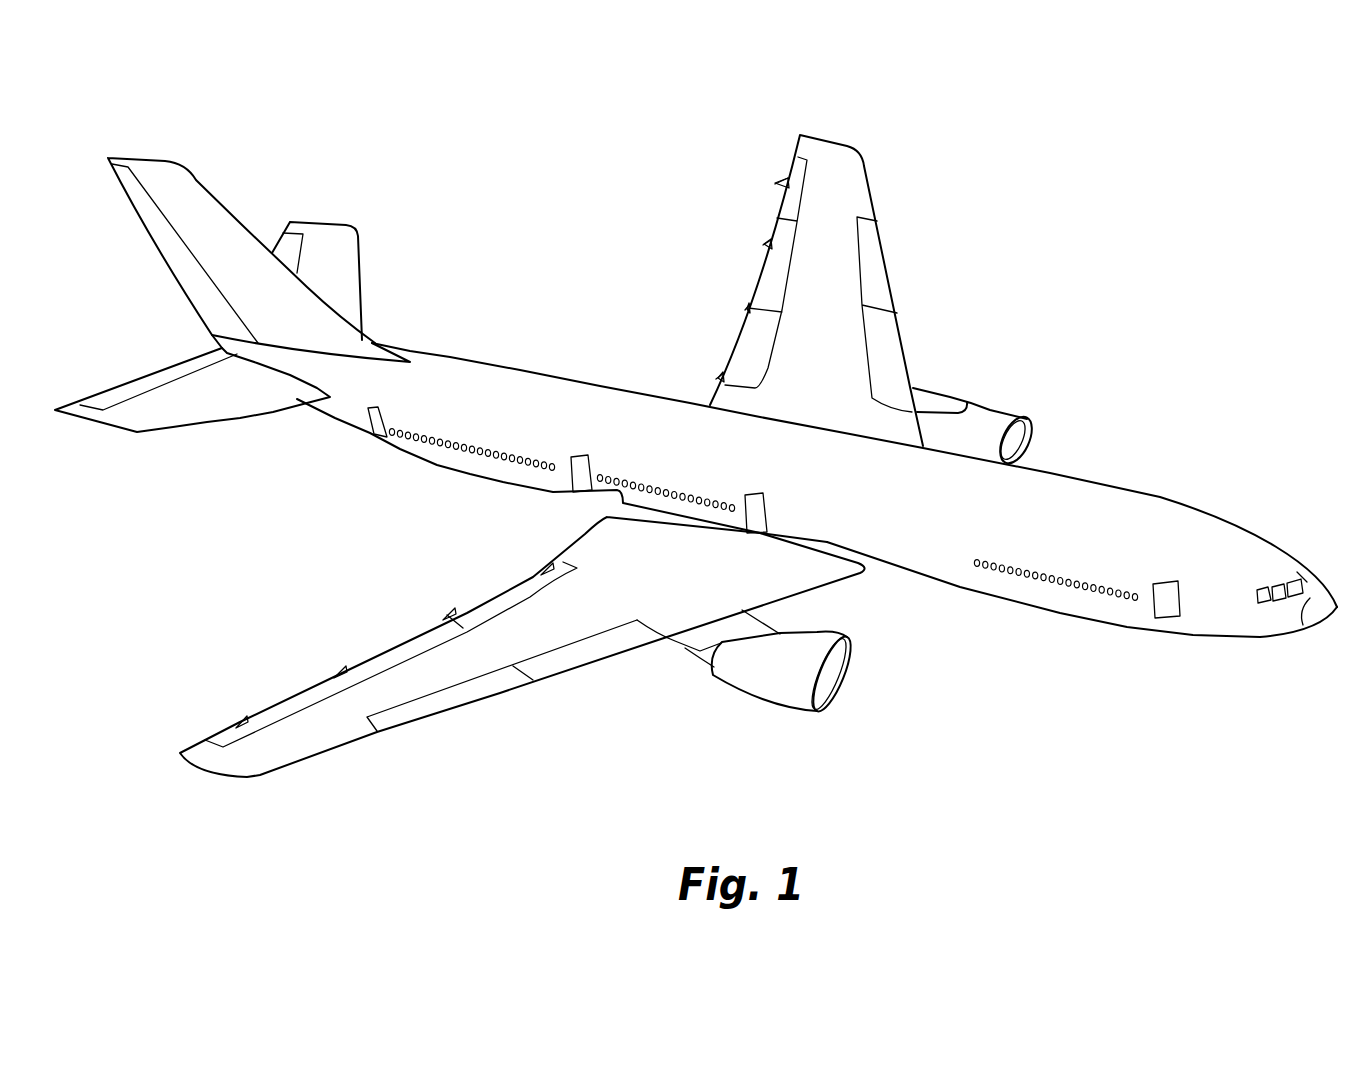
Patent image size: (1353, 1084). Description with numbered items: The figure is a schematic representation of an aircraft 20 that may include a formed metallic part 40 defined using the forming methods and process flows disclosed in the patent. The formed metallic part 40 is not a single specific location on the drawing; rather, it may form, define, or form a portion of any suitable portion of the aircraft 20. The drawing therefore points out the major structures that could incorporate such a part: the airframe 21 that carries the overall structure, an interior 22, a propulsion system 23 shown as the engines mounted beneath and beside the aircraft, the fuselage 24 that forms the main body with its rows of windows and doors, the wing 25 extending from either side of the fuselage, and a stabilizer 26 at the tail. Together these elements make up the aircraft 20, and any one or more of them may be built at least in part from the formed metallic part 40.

The aircraft 20 is at (1262, 168).
The airframe 21 is at (817, 458).
The interior 22 is at (488, 377).
The fuselage 24 is at (552, 373).
The propulsion system 23 is at (1003, 410).
The wing 25 is at (807, 255).
The stabilizer 26 is at (150, 413).
The formed metallic part 40 is at (1170, 242).